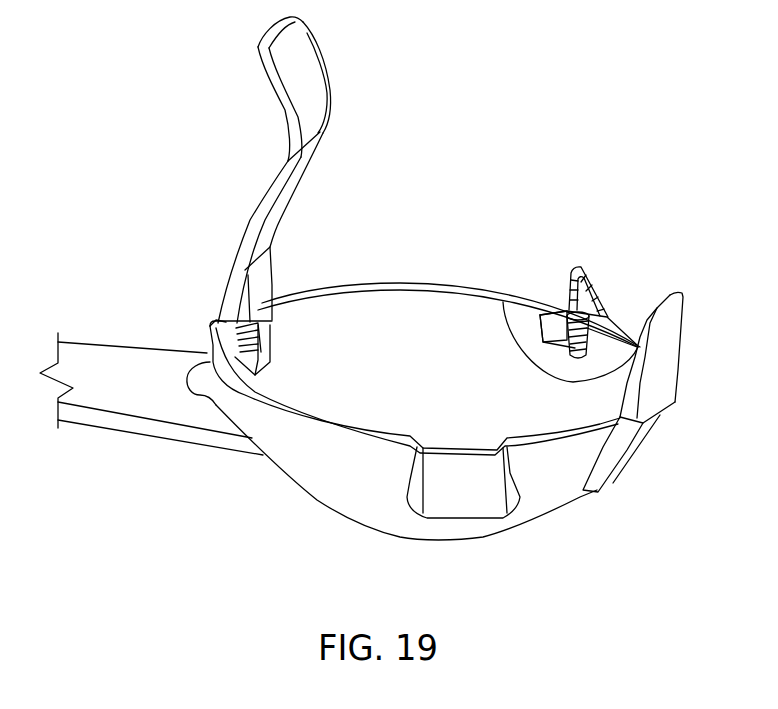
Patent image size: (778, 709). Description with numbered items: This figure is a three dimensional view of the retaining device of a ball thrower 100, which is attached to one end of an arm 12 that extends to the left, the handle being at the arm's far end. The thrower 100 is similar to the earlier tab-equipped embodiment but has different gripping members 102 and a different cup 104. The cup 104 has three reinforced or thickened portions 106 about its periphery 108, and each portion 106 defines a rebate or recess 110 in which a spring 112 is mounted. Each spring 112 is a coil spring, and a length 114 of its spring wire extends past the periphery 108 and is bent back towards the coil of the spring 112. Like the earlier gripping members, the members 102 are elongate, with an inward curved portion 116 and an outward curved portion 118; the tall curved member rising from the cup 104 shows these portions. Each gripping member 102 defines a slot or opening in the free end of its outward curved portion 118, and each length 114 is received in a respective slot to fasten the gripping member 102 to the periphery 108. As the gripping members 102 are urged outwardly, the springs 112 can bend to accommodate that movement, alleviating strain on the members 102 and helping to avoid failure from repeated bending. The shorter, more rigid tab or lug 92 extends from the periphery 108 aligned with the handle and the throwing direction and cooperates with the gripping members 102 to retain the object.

The ball thrower 100 is at (484, 84).
The gripping member 102 is at (327, 63).
The cup 104 is at (300, 463).
The reinforced or thickened portion 106 is at (212, 363).
The periphery 108 is at (353, 287).
The rebate or recess 110 is at (552, 325).
The spring 112 is at (600, 290).
The length of spring wire 114 is at (577, 265).
The inward curved portion 116 is at (285, 98).
The outward curved portion 118 is at (232, 272).
The tab or lug 92 is at (670, 293).
The arm 12 is at (100, 421).